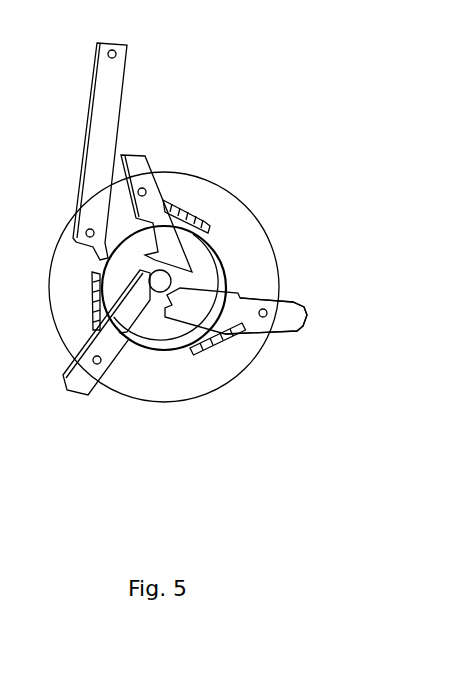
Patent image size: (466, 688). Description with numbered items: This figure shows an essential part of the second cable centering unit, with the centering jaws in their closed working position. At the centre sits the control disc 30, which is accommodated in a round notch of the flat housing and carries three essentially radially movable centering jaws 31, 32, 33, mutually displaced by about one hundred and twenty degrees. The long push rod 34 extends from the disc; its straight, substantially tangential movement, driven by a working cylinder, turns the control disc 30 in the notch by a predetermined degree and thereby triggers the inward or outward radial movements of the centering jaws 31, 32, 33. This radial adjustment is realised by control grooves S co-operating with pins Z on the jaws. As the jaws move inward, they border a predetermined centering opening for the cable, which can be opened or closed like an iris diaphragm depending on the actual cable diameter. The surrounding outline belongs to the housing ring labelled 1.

The housing ring 1 is at (139, 287).
The control disc 30 is at (270, 286).
The centering jaw 31 is at (157, 205).
The centering jaw 32 is at (280, 322).
The centering jaw 33 is at (82, 380).
The push rod 34 is at (110, 100).
The pin Z is at (145, 192).
The control groove S is at (210, 228).